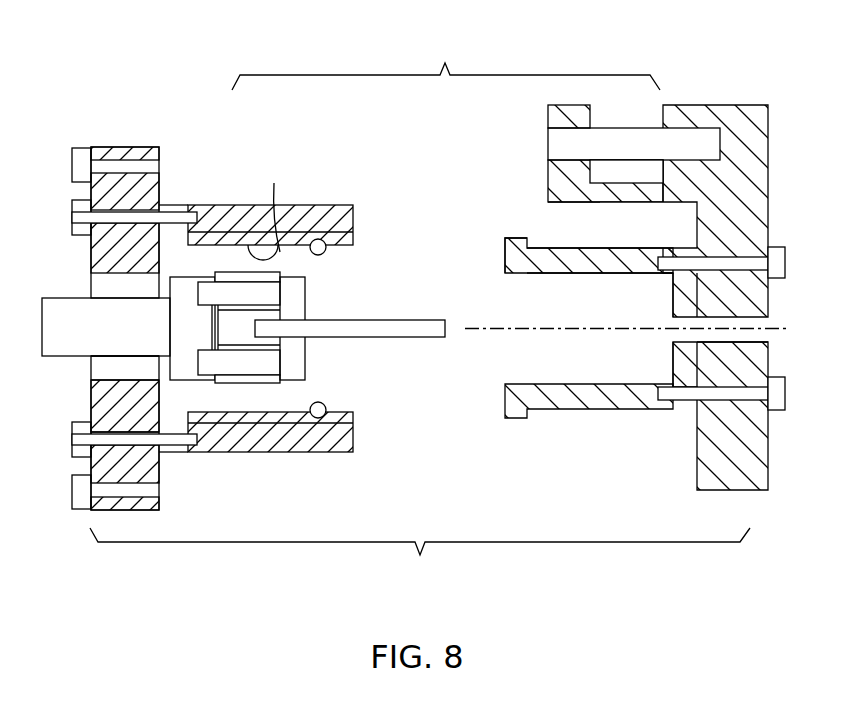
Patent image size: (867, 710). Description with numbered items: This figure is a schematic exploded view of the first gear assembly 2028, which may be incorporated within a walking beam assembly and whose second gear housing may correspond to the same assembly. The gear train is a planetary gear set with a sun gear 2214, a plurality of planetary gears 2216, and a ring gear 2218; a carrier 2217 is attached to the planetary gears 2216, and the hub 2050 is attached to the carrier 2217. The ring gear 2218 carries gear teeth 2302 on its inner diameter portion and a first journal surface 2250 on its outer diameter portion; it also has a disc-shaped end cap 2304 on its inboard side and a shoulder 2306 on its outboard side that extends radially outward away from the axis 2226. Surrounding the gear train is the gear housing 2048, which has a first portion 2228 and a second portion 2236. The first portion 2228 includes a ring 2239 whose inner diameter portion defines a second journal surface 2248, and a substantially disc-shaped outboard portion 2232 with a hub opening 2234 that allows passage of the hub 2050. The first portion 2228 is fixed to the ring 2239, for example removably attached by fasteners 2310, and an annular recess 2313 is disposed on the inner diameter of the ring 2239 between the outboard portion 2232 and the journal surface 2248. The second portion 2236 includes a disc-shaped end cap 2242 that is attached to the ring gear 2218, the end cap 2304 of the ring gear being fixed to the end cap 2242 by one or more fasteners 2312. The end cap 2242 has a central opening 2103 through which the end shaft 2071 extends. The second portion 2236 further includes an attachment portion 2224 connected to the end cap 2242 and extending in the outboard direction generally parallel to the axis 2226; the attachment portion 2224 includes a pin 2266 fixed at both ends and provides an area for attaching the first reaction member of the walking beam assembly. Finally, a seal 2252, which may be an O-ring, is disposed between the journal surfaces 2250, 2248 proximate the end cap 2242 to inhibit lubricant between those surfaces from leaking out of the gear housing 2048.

The gear housing 2048 is at (446, 63).
The first gear assembly 2028 is at (420, 556).
The second portion 2236 is at (718, 106).
The first portion 2228 is at (100, 145).
The fasteners 2310 is at (100, 218).
The annular recess 2313 is at (190, 213).
The second journal surface 2248 is at (272, 209).
The ring 2239 is at (330, 218).
The seal 2252 is at (325, 243).
The carrier 2217 is at (183, 287).
The hub 2050 is at (84, 313).
The hub opening 2234 is at (130, 382).
The outboard portion 2232 is at (117, 417).
The planetary gears 2216 is at (258, 292).
The sun gear 2214 is at (243, 325).
The end shaft 2071 is at (425, 330).
The attachment portion 2224 is at (548, 115).
The pin 2266 is at (560, 148).
The end cap 2242 is at (730, 195).
The first journal surface 2250 is at (585, 247).
The ring gear 2218 is at (517, 260).
The gear teeth 2302 is at (590, 277).
The end cap 2304 is at (687, 290).
The shoulder 2306 is at (520, 417).
The fasteners 2312 is at (745, 250).
The central opening 2103 is at (755, 338).
The axis 2226 is at (577, 333).